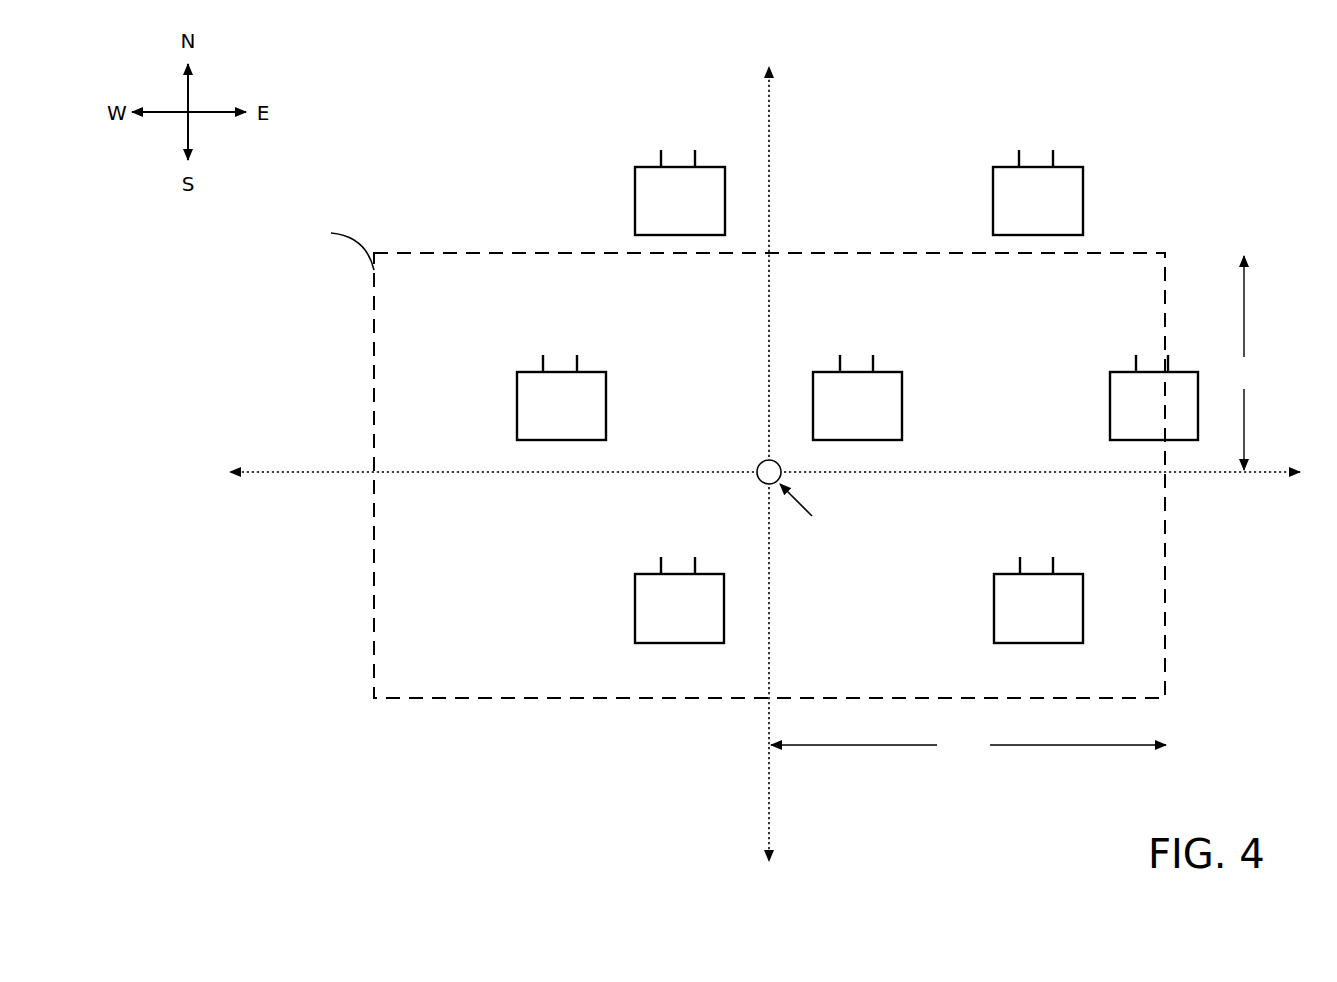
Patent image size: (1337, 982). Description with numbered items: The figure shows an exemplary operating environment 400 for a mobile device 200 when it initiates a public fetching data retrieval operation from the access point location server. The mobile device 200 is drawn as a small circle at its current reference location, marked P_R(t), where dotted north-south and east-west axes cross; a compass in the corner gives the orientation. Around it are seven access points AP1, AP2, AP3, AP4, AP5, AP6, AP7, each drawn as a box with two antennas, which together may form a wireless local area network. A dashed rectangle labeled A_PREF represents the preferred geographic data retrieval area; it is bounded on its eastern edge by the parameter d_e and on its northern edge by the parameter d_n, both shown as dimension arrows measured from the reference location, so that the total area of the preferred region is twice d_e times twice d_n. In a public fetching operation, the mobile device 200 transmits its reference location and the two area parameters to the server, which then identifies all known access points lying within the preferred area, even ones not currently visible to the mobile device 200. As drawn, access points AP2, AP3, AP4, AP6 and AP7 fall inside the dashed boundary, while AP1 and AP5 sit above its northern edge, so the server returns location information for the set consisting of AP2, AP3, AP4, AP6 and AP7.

The mobile device 200 is at (766, 460).
The operating environment 400 is at (1230, 90).
The access point AP1 is at (680, 192).
The access point AP2 is at (561, 397).
The access point AP3 is at (679, 600).
The access point AP4 is at (857, 397).
The access point AP5 is at (1038, 192).
The access point AP6 is at (1154, 397).
The access point AP7 is at (1038, 600).